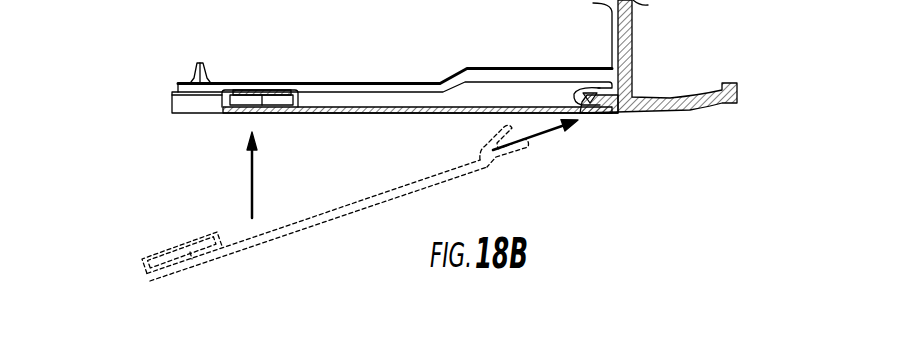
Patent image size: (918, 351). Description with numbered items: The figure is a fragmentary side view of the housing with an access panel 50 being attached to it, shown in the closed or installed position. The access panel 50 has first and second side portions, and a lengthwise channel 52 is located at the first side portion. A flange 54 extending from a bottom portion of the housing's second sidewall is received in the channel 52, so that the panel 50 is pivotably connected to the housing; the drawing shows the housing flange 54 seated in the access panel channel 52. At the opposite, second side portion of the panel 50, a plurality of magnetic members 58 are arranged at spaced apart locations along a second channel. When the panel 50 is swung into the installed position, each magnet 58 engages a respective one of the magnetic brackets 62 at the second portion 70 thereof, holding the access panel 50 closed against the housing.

The access panel 50 is at (398, 212).
The lengthwise channel 52 is at (585, 97).
The flange 54 is at (608, 100).
The magnetic member 58 is at (277, 100).
The magnetic bracket 62 is at (421, 48).
The second portion 70 is at (342, 81).